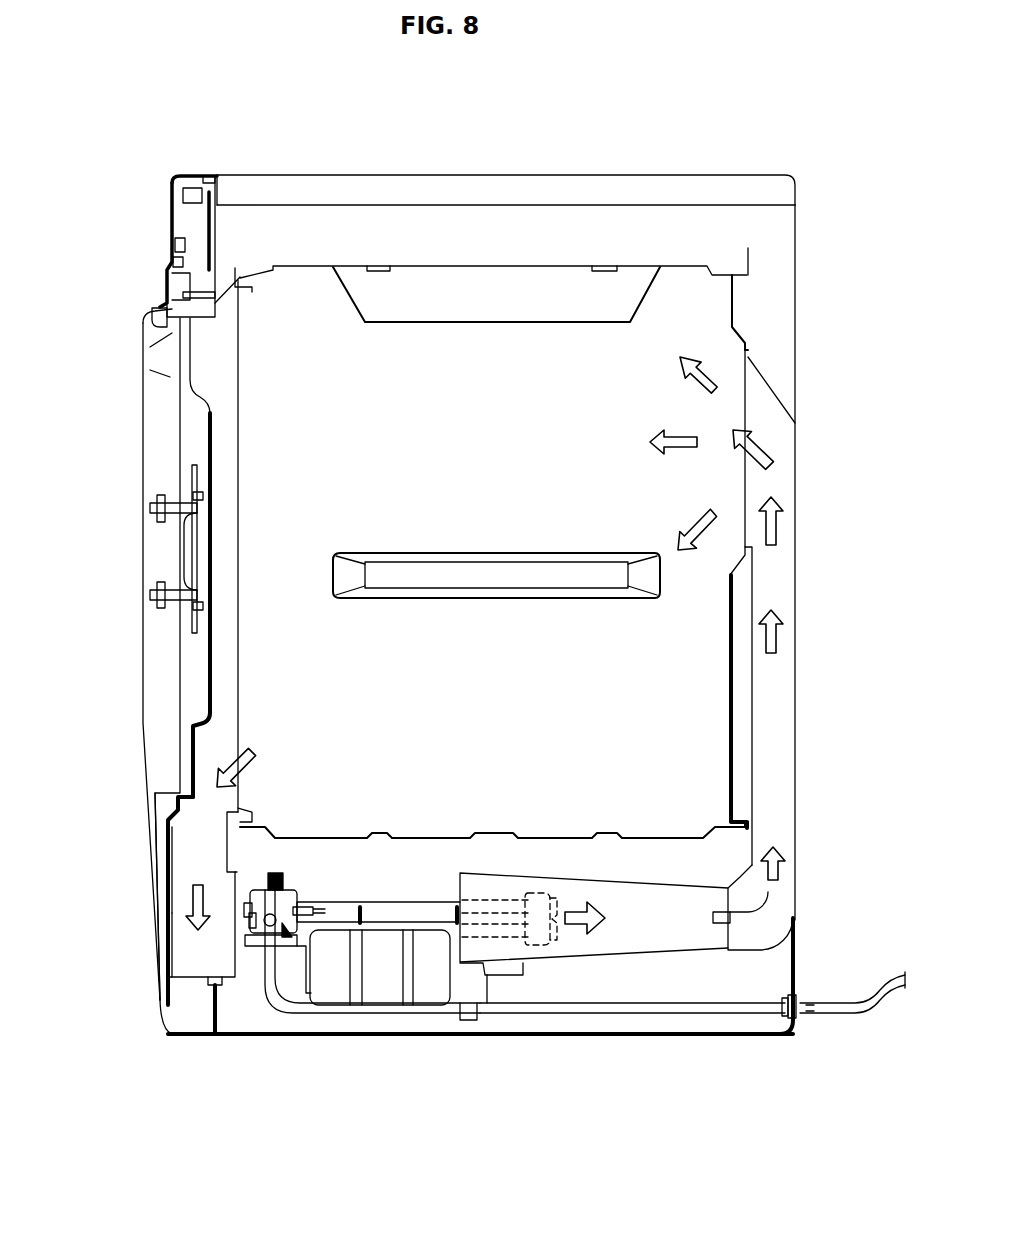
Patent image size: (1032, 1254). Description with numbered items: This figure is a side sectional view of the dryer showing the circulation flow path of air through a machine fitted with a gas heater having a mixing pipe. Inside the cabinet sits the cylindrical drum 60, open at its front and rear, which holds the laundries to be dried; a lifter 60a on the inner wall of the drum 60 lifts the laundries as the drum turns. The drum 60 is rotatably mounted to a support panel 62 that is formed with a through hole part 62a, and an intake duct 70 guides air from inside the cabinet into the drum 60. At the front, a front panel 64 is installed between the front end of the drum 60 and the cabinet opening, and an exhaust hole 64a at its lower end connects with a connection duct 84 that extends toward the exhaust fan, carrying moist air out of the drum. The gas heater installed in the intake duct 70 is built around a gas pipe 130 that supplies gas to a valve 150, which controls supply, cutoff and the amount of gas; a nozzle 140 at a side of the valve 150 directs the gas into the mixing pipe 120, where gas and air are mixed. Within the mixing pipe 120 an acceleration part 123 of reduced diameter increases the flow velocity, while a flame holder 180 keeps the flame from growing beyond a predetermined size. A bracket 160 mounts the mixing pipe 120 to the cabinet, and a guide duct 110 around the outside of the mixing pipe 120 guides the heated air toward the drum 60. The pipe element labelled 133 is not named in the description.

The drum 60 is at (455, 266).
The lifter 60a is at (575, 272).
The support panel 62 is at (732, 636).
The through hole part 62a is at (745, 497).
The intake duct 70 is at (780, 692).
The nozzle 140 is at (296, 930).
The exhaust hole 64a is at (217, 810).
The front panel 64 is at (226, 830).
The connection duct 84 is at (183, 952).
The valve 150 is at (248, 920).
The water supply pipe 133 is at (302, 953).
The bracket 160 is at (336, 977).
The acceleration part 123 is at (330, 905).
The mixing pipe 120 is at (398, 905).
The gas pipe 130 is at (540, 1003).
The flame holder 180 is at (560, 928).
The guide duct 110 is at (648, 925).